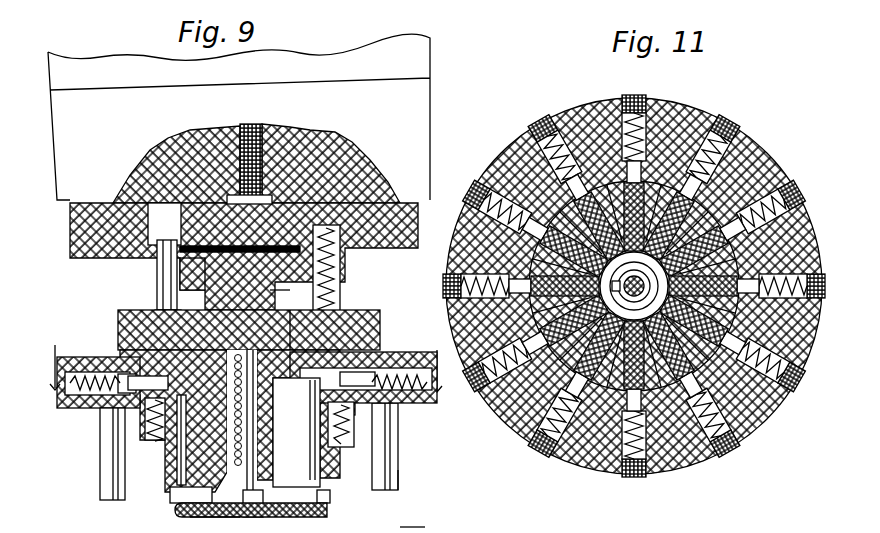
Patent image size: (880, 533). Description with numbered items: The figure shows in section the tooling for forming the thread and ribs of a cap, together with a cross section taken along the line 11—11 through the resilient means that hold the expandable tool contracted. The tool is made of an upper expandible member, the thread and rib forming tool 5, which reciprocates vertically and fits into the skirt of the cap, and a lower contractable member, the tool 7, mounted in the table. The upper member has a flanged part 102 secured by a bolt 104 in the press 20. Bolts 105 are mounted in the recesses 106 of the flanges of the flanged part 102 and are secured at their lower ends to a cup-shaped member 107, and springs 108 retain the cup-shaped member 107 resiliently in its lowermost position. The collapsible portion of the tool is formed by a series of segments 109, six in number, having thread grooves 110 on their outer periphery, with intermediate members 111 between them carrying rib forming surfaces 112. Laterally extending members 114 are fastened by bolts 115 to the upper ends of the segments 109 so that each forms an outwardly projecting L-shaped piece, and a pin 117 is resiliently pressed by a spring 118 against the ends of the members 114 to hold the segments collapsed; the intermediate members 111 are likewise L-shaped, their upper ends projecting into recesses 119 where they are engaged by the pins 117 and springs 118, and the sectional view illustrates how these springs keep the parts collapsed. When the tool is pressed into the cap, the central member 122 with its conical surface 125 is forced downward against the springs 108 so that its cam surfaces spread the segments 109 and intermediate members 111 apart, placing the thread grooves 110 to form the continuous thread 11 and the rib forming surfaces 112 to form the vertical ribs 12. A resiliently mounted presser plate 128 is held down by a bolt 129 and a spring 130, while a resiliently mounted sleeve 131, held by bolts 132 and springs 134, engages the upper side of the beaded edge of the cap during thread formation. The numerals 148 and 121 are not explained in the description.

In FIG. 9, the press 20 is at (415, 88).
In FIG. 9, the flanged part 102 is at (400, 212).
In FIG. 9, the bolt 104 is at (250, 124).
In FIG. 9, the recesses 106 is at (155, 225).
In FIG. 9, the bolts 105 is at (160, 275).
In FIG. 9, the bolt 129 is at (197, 281).
In FIG. 9, the central member 122 is at (288, 291).
In FIG. 11, the central member 122 is at (571, 396).
In FIG. 9, the springs 108 is at (335, 290).
In FIG. 9, the spring 130 is at (333, 312).
In FIG. 9, the cup-shaped member 107 is at (350, 325).
In FIG. 11, the cup-shaped member 107 is at (775, 412).
In FIG. 9, the recesses 119 is at (360, 335).
In FIG. 11, the recesses 119 is at (667, 406).
In FIG. 9, the pin 117 is at (140, 372).
In FIG. 11, the pin 117 is at (665, 165).
In FIG. 9, the spring 118 is at (95, 398).
In FIG. 11, the spring 118 is at (714, 182).
In FIG. 9, the laterally extending members 114 is at (130, 390).
In FIG. 11, the laterally extending members 114 is at (735, 212).
In FIG. 9, the leg 148 is at (100, 455).
In FIG. 9, the thread 11 is at (253, 359).
In FIG. 9, the springs 134 is at (355, 405).
In FIG. 9, the bolts 132 is at (360, 412).
In FIG. 9, the chamber 121 is at (296, 432).
In FIG. 9, the vertical ribs 12 is at (280, 448).
In FIG. 9, the conical surface 125 is at (276, 470).
In FIG. 9, the sleeve 131 is at (340, 462).
In FIG. 9, the rib forming surfaces 112 is at (320, 498).
In FIG. 9, the thread grooves 110 is at (175, 495).
In FIG. 9, the segments 109 is at (188, 503).
In FIG. 9, the intermediate members 111 is at (285, 517).
In FIG. 9, the bolts 115 is at (190, 519).
In FIG. 9, the presser plate 128 is at (228, 519).
In FIG. 9, the thread and rib forming tools 5 is at (410, 474).
In FIG. 9, the tools 7 is at (405, 532).